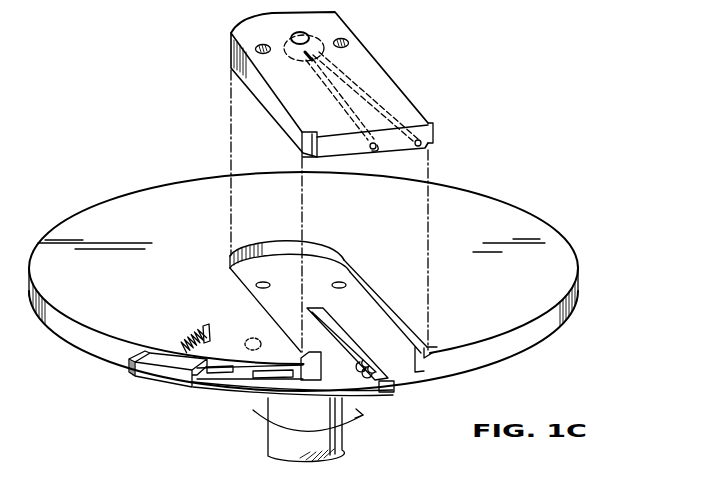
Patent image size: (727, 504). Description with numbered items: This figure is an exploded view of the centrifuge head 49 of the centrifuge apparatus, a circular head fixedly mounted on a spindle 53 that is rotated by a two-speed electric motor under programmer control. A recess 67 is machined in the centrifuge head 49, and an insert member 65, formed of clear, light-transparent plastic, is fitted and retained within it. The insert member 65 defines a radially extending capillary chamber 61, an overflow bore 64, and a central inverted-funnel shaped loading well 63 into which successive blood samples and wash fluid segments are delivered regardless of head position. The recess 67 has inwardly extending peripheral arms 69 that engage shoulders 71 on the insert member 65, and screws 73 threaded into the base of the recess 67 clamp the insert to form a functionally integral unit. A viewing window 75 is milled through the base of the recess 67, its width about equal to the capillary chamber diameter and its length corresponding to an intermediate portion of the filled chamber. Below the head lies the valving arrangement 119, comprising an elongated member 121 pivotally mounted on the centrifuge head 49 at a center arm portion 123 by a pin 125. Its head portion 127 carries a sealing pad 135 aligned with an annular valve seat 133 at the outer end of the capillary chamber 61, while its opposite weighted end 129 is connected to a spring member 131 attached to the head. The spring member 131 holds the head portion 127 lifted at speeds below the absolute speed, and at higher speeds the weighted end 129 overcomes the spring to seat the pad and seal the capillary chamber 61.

The centrifuge head 49 is at (577, 265).
The spindle 53 is at (275, 445).
The capillary chamber 61 is at (330, 95).
The loading well 63 is at (291, 41).
The overflow bore 64 is at (353, 94).
The insert member 65 is at (428, 87).
The recess 67 is at (345, 272).
The peripheral arms 69 is at (321, 347).
The shoulders 71 is at (302, 145).
The screws 73 is at (257, 50).
The viewing window 75 is at (325, 323).
The valving arrangement 119 is at (212, 397).
The elongated member 121 is at (240, 390).
The center arm portion 123 is at (242, 348).
The pin 125 is at (264, 350).
The head portion 127 is at (380, 393).
The weighted end 129 is at (129, 373).
The spring member 131 is at (187, 338).
The annular valve seat 133 is at (373, 151).
The sealing pad 135 is at (370, 362).